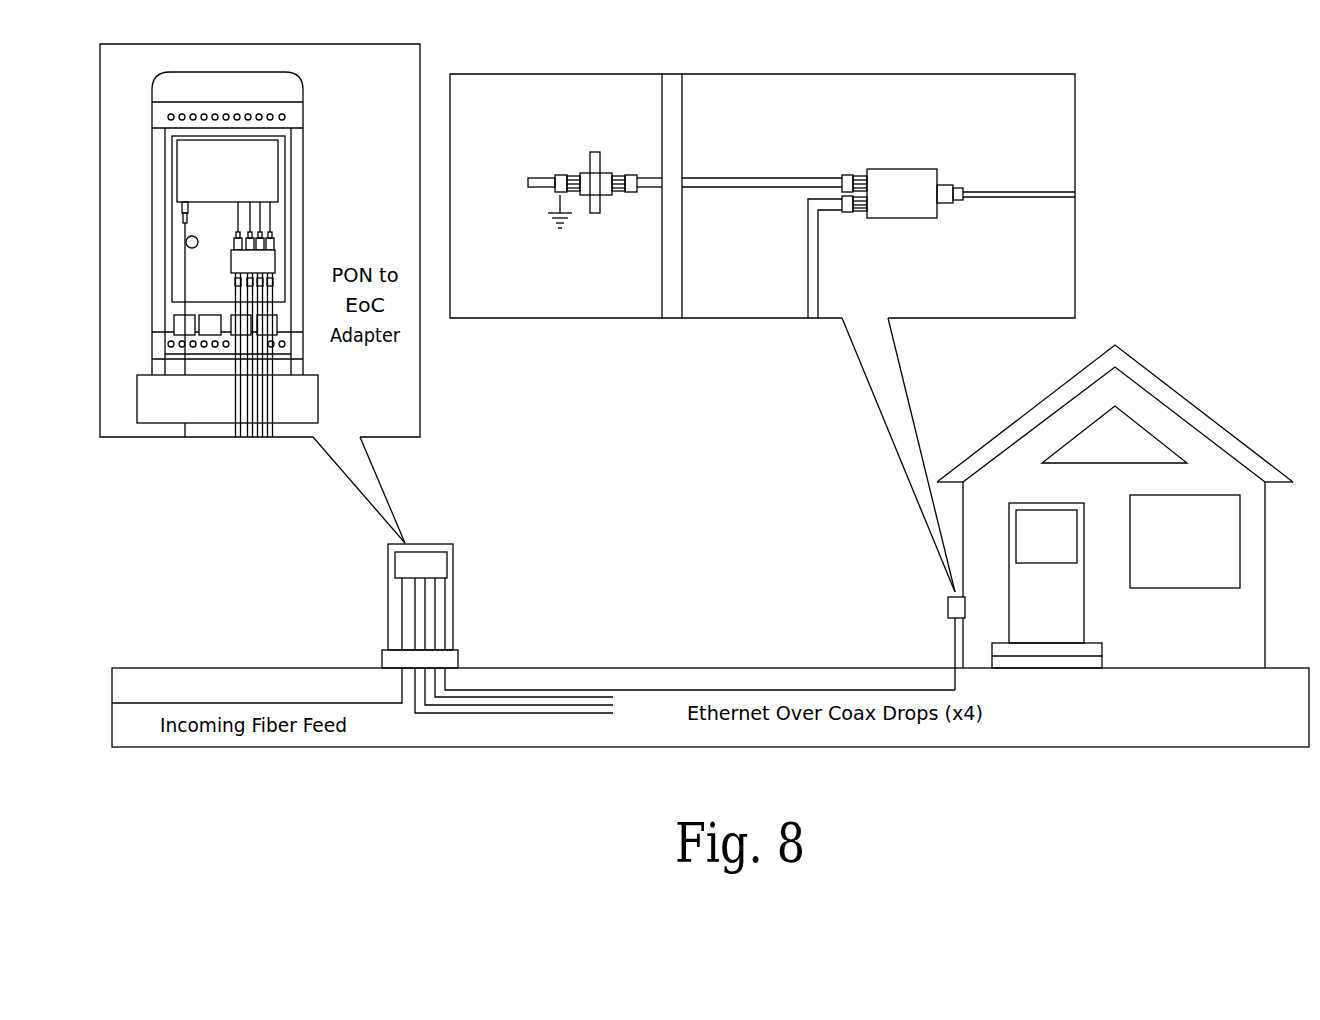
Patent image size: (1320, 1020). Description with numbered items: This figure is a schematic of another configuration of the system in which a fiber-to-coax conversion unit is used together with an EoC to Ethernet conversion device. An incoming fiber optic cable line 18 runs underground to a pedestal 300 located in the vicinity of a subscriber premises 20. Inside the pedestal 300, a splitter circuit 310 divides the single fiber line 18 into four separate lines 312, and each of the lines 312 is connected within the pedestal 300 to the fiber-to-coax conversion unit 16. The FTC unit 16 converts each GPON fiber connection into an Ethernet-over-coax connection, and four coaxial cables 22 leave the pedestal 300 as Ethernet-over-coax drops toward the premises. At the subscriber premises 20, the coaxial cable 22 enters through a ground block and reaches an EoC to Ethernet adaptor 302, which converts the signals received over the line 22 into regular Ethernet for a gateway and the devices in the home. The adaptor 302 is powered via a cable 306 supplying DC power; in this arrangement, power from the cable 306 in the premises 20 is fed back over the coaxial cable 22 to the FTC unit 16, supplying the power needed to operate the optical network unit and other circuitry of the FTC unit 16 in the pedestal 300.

The fiber-to-coax conversion unit 16 is at (262, 258).
The fiber optic cable line 18 is at (373, 707).
The subscriber premises 20 is at (794, 96).
The coaxial cable 22 is at (630, 692).
The pedestal 300 is at (453, 597).
The EoC to Ethernet adaptor 302 is at (900, 169).
The power cable 306 is at (818, 297).
The splitter circuit 310 is at (278, 168).
The separate lines 312 is at (238, 212).